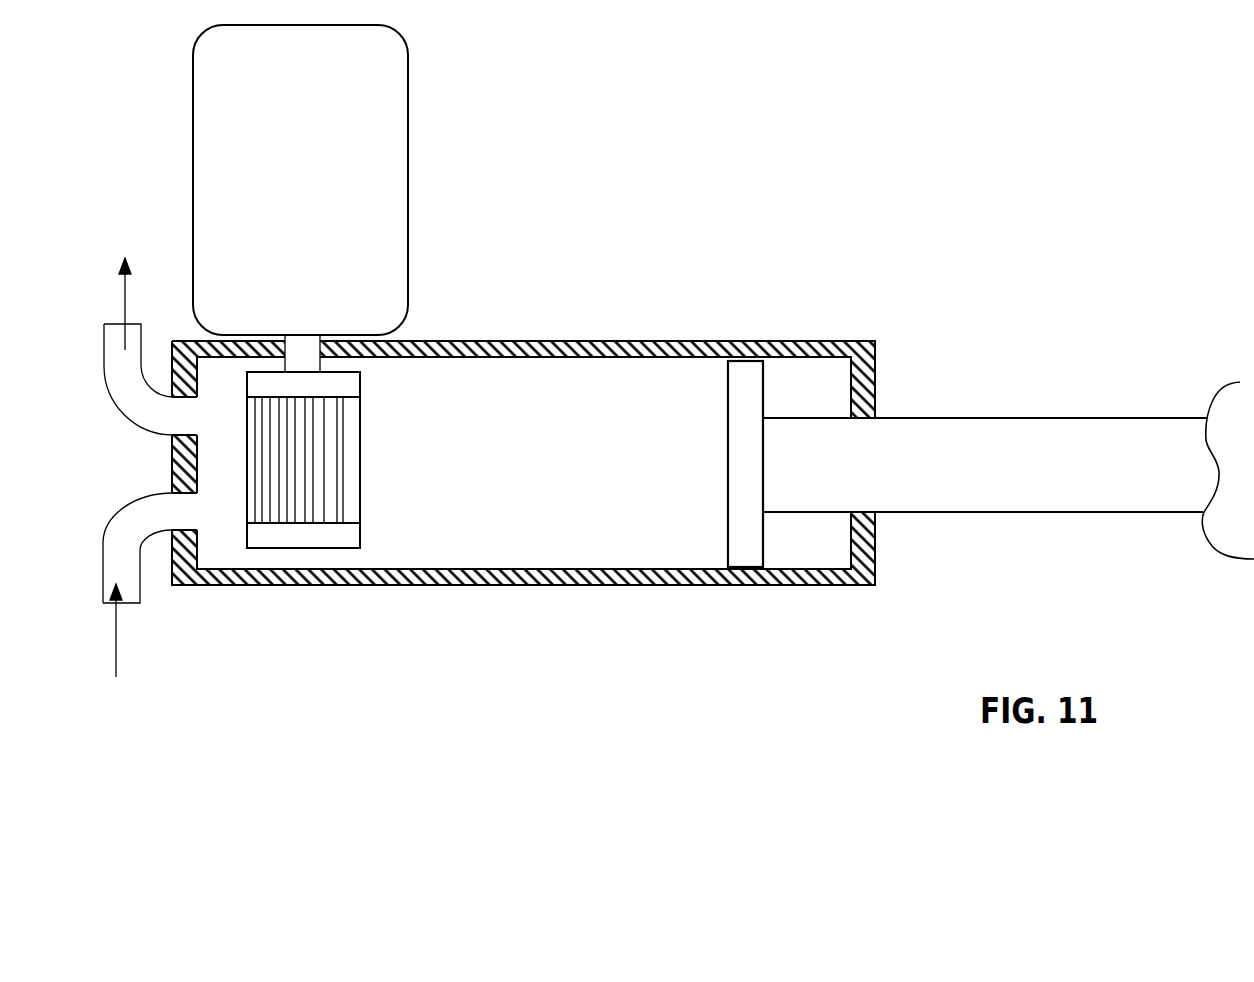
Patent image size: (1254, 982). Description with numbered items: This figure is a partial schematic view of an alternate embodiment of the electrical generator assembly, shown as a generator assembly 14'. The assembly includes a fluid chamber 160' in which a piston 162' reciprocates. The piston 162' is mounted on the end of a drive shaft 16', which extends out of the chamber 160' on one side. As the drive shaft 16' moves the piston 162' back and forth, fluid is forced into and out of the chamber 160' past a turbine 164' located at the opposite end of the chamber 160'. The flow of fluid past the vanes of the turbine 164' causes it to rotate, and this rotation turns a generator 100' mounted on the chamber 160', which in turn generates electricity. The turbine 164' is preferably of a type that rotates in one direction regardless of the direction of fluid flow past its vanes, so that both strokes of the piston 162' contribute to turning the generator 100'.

The generator assembly 14' is at (678, 351).
The generator 100' is at (355, 198).
The fluid chamber 160' is at (523, 484).
The piston 162' is at (691, 464).
The turbine 164' is at (298, 495).
The drive shaft 16' is at (1008, 456).